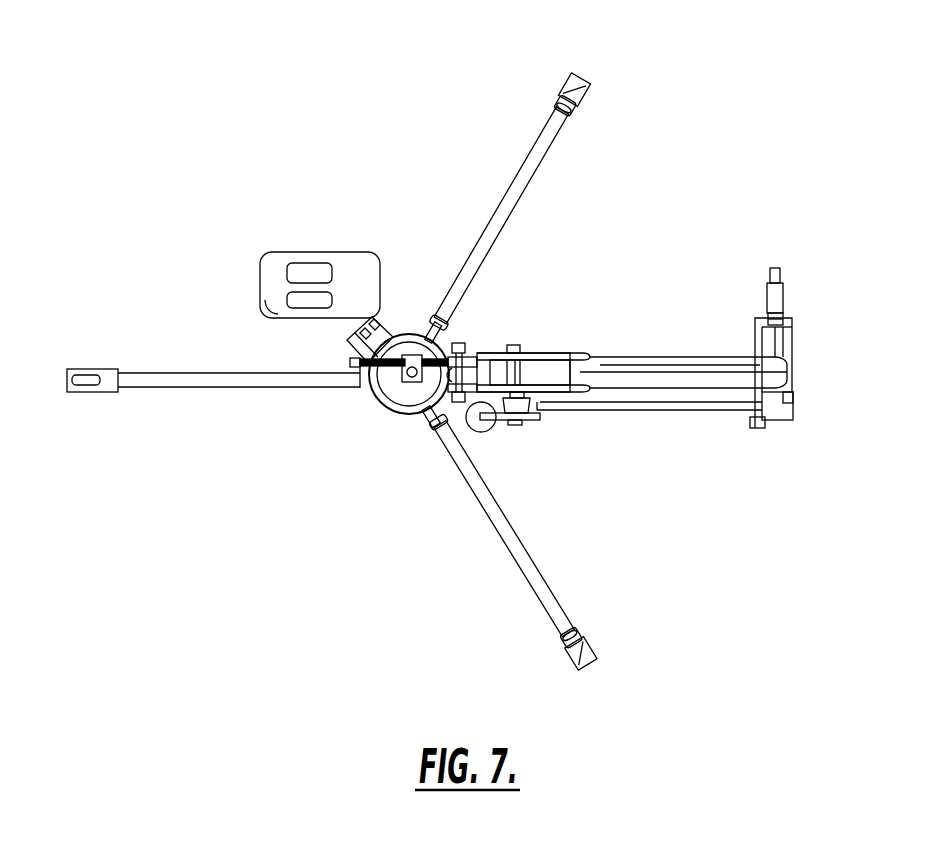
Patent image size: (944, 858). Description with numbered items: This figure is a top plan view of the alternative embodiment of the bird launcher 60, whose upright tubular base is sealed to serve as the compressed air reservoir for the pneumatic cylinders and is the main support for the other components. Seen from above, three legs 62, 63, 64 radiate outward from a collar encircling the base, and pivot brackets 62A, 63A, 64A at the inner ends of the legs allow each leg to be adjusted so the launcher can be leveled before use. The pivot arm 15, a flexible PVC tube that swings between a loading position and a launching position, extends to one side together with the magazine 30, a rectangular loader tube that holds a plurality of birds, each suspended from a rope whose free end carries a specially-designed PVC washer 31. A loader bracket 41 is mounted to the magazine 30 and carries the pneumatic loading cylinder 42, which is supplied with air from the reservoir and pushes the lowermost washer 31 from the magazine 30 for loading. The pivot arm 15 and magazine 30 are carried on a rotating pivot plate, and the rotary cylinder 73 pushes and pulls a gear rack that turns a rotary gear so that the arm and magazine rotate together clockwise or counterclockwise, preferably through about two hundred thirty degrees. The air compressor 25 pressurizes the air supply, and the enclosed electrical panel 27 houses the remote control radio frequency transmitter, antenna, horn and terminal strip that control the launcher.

The pivot arm 15 is at (665, 455).
The air compressor 25 is at (320, 232).
The electrical panel 27 is at (495, 302).
The magazine 30 is at (683, 223).
The PVC washer 31 is at (680, 436).
The bracket 41 is at (749, 300).
The pneumatic loading cylinder 42 is at (812, 254).
The bird launcher 60 is at (264, 272).
The leg 62 is at (213, 439).
The pivot bracket 62A is at (336, 447).
The leg 63 is at (512, 542).
The pivot bracket 63A is at (426, 488).
The leg 64 is at (508, 167).
The pivot bracket 64A is at (513, 259).
The rotary cylinder 73 is at (280, 329).